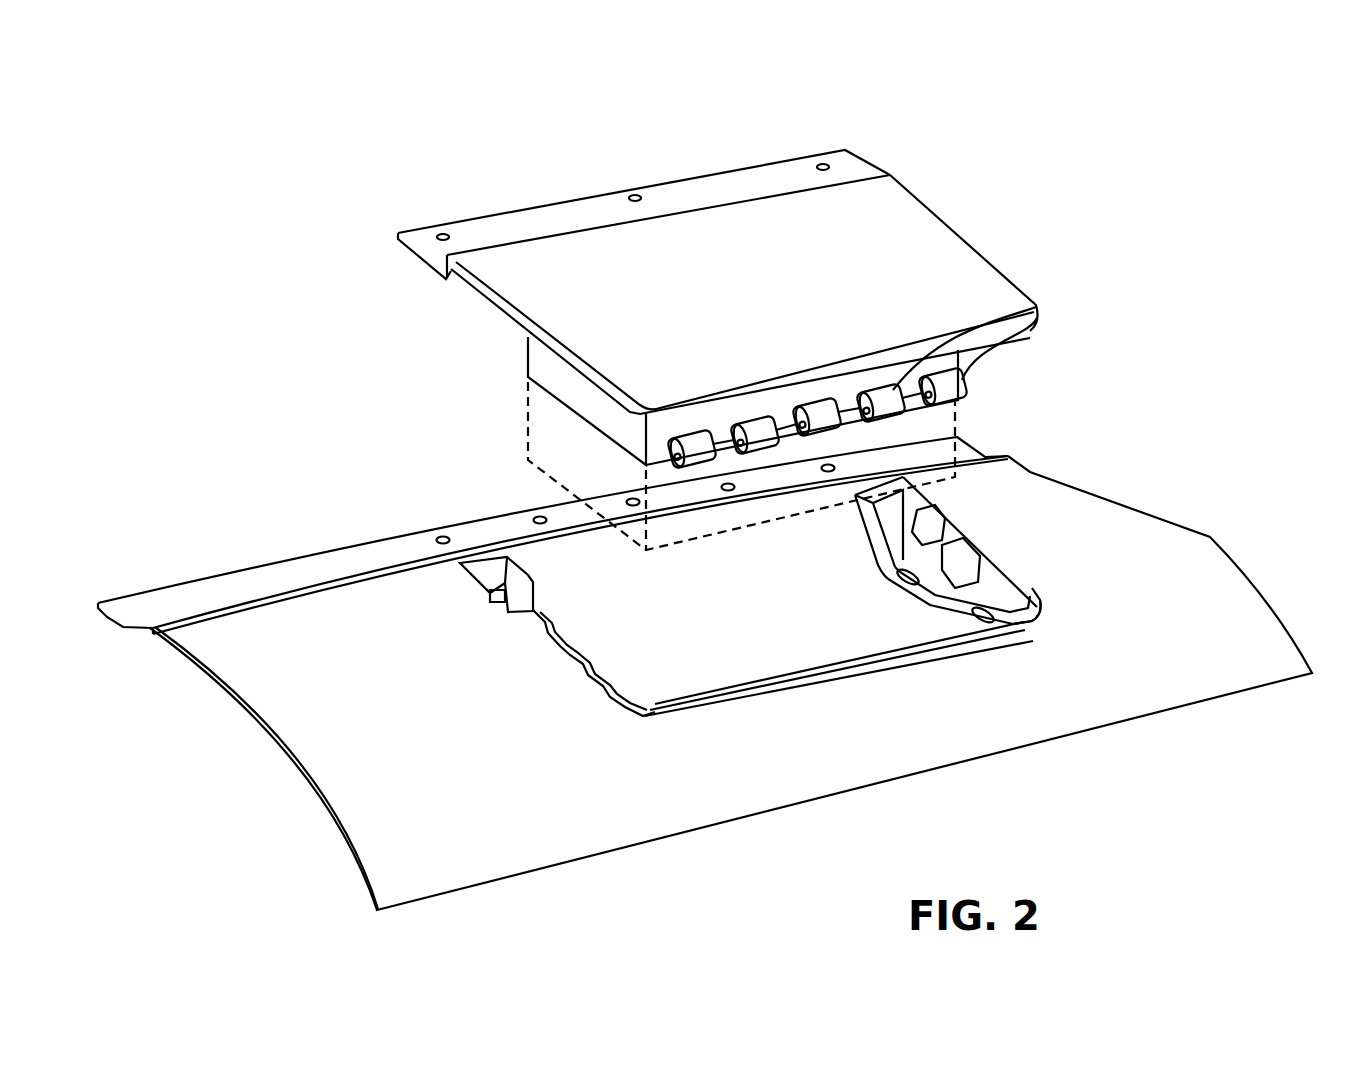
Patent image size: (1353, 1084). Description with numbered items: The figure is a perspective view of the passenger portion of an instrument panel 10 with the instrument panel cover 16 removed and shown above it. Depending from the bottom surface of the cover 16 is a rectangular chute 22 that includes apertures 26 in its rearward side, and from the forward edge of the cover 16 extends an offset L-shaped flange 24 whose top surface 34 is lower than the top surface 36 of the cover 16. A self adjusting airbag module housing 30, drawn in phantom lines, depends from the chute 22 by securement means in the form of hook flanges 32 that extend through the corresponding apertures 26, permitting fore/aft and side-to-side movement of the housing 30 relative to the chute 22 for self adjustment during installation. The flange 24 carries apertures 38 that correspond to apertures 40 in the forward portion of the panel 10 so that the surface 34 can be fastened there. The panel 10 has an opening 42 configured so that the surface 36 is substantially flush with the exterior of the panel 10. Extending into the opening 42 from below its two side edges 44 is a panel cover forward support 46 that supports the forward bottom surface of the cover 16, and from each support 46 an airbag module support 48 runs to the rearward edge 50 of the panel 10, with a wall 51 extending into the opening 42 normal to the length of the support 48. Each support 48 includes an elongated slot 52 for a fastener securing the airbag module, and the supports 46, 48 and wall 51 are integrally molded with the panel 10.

The instrument panel 10 is at (467, 787).
The instrument panel cover 16 is at (682, 301).
The chute 22 is at (528, 360).
The L-shaped flange 24 is at (430, 247).
The apertures 26 is at (672, 447).
The airbag module housing 30 is at (530, 398).
The hook flanges 32 is at (1040, 320).
The top surface of L-shaped flange 34 is at (533, 223).
The top surface of cover 36 is at (927, 237).
The apertures 38 is at (820, 165).
The apertures 40 is at (830, 470).
The opening 42 is at (458, 562).
The side edges 44 is at (485, 608).
The panel cover forward support 46 is at (498, 573).
The airbag module support 48 is at (970, 590).
The rearward edge 50 is at (1035, 628).
The wall 51 is at (983, 603).
The elongated slot 52 is at (940, 578).